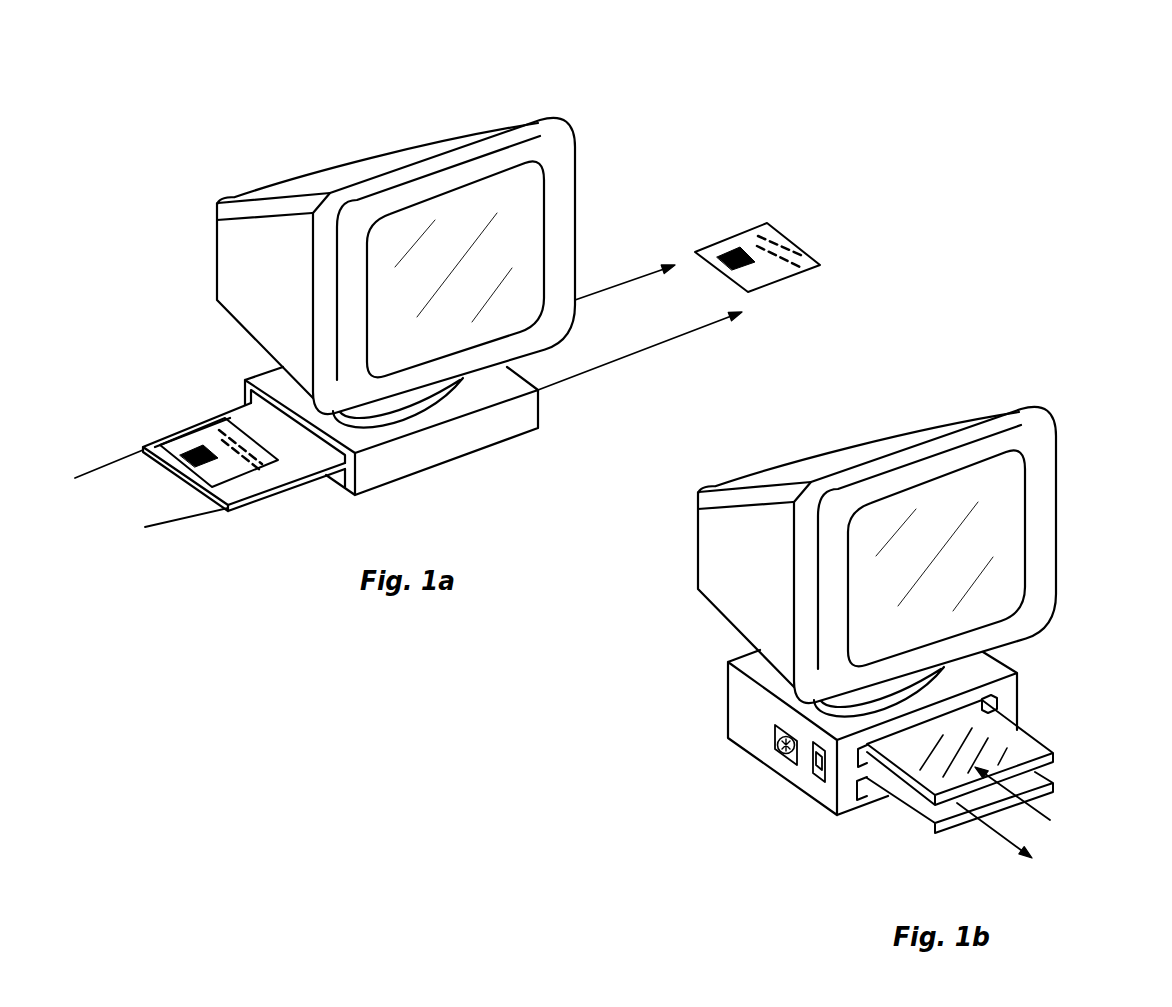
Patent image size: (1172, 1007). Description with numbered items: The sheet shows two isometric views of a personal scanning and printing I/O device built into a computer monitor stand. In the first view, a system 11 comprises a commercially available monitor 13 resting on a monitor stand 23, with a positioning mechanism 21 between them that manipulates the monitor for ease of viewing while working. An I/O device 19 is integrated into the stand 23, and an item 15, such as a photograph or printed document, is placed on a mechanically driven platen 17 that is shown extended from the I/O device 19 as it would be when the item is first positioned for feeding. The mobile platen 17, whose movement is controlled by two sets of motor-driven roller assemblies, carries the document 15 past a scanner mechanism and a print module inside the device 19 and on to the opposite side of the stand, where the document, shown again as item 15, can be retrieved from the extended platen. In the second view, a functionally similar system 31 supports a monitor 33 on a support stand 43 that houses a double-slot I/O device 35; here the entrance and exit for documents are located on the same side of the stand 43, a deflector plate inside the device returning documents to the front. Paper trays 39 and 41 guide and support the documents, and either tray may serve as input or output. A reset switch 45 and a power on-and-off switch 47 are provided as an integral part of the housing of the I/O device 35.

In FIG. 1A, the system 11 is at (316, 93).
In FIG. 1A, the monitor 13 is at (326, 180).
In FIG. 1A, the item 15 is at (196, 455).
In FIG. 1A, the platen 17 is at (223, 490).
In FIG. 1A, the I/O device 19 is at (330, 476).
In FIG. 1A, the positioning mechanism 21 is at (392, 422).
In FIG. 1A, the monitor stand 23 is at (467, 435).
In FIG. 1B, the system 31 is at (1073, 321).
In FIG. 1B, the monitor 33 is at (884, 443).
In FIG. 1B, the I/O device 35 is at (995, 699).
In FIG. 1B, the paper tray 39 is at (948, 828).
In FIG. 1B, the paper tray 41 is at (1040, 740).
In FIG. 1B, the support stand 43 is at (737, 707).
In FIG. 1B, the reset switch 45 is at (783, 755).
In FIG. 1B, the power on-and-off switch 47 is at (822, 778).